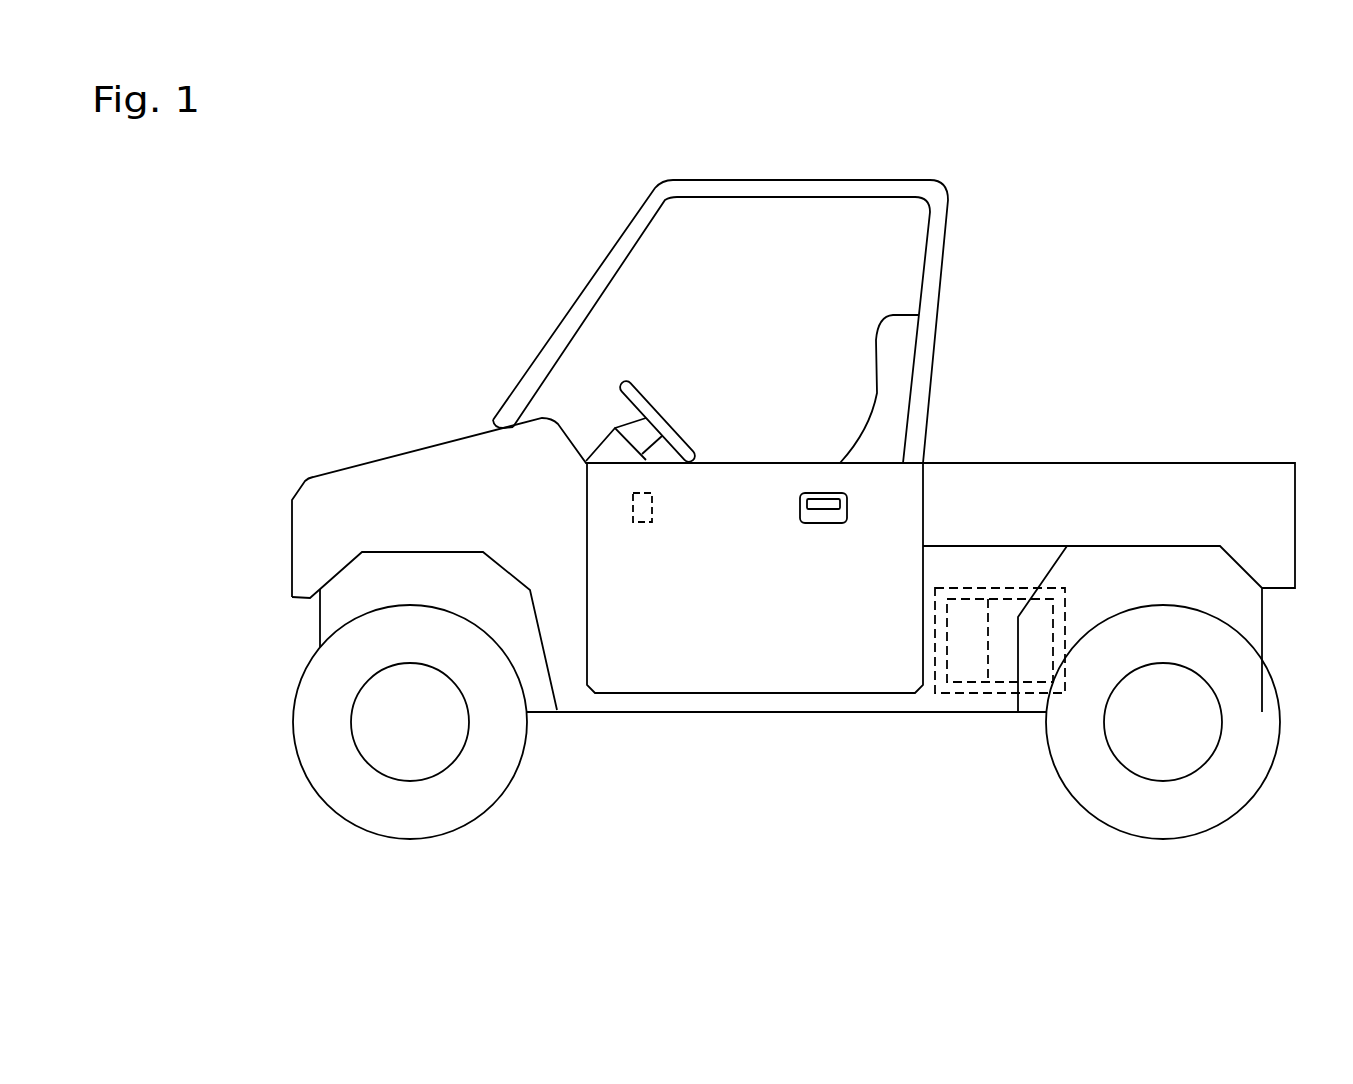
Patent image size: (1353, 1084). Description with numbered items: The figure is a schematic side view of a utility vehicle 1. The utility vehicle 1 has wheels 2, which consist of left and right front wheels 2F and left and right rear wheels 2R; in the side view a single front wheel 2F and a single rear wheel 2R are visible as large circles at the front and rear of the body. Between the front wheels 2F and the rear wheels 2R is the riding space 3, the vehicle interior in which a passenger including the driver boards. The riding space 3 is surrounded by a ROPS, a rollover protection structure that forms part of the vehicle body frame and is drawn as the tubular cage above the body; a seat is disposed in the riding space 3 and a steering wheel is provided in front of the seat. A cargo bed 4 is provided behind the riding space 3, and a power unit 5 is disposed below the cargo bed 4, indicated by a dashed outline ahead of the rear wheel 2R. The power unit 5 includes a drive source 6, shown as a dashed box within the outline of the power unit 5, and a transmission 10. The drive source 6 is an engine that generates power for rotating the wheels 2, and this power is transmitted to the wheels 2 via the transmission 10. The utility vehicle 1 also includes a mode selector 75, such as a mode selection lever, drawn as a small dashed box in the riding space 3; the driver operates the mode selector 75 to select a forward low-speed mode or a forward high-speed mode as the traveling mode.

The utility vehicle 1 is at (1139, 310).
The wheels 2 is at (801, 763).
The front wheels 2F is at (462, 832).
The rear wheels 2R is at (1215, 832).
The riding space 3 is at (777, 323).
The cargo bed 4 is at (1195, 462).
The power unit 5 is at (937, 693).
The drive source 6 is at (963, 683).
The transmission 10 is at (1005, 683).
The mode selector 75 is at (653, 508).